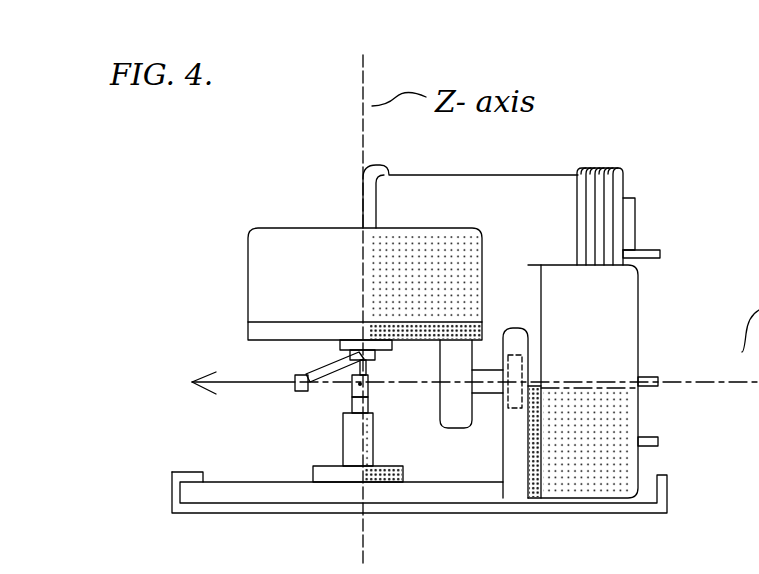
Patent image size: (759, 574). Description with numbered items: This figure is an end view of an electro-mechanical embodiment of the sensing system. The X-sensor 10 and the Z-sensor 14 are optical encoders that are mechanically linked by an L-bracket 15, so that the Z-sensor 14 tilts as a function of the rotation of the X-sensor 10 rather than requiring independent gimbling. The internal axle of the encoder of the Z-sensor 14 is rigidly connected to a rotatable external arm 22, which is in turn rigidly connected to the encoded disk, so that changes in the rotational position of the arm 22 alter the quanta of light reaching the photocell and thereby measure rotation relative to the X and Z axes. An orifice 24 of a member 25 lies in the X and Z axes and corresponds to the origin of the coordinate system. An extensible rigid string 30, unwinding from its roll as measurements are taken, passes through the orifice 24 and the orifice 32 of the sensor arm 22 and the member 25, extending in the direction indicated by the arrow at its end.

The X-sensor 10 is at (618, 417).
The Z-sensor 14 is at (301, 244).
The L-bracket 15 is at (485, 321).
The external arm 22 is at (303, 371).
The orifice 24 is at (366, 388).
The member 25 is at (345, 452).
The extensible rigid string 30 is at (189, 377).
The orifice 32 is at (293, 391).